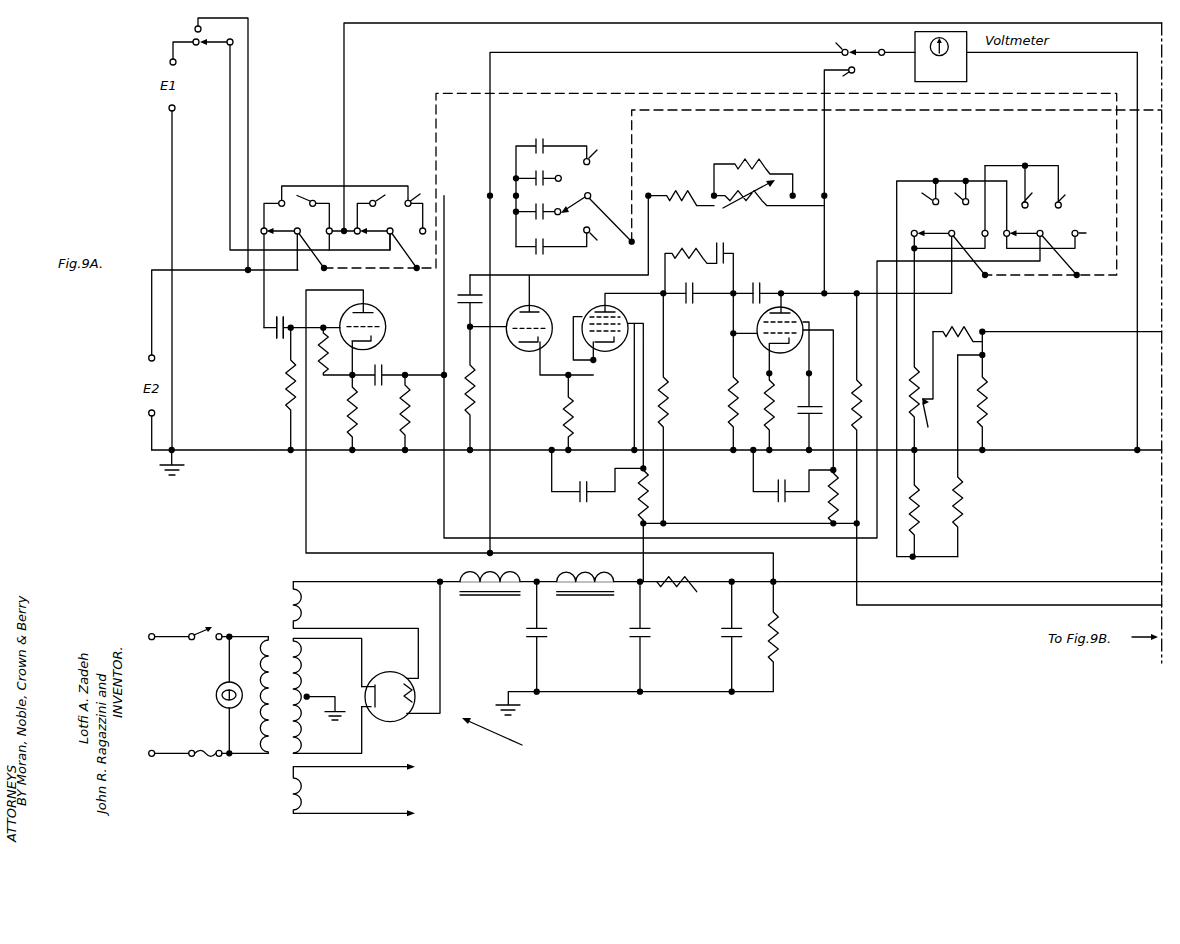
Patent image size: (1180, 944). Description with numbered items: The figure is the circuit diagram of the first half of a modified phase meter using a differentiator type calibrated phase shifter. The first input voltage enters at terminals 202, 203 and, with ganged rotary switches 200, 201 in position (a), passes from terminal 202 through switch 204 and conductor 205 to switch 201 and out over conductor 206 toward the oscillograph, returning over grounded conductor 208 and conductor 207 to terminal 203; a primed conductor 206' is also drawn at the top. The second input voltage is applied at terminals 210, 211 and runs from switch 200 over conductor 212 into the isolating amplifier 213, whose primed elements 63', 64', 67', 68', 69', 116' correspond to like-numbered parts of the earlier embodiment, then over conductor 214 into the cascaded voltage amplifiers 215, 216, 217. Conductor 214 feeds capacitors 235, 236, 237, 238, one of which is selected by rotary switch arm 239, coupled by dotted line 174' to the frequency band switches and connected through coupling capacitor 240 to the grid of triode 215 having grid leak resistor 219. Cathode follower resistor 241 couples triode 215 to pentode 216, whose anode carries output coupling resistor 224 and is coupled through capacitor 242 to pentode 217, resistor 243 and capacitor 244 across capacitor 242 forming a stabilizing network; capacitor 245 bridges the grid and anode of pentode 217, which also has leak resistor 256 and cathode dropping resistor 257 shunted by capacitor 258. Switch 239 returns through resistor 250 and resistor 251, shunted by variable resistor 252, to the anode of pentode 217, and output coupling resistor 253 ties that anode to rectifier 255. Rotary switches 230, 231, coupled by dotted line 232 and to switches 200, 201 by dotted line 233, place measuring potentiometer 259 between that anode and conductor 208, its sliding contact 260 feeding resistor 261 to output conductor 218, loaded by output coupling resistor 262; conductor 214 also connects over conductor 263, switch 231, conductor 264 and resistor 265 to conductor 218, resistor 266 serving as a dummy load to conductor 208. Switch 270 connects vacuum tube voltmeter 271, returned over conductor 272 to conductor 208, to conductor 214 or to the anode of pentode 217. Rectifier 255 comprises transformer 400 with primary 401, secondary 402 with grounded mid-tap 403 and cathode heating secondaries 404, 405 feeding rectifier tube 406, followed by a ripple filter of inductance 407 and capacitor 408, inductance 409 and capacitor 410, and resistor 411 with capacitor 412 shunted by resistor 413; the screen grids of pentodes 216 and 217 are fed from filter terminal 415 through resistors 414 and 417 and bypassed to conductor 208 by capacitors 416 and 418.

The rotary switch 200 is at (292, 229).
The rotary switch 201 is at (376, 229).
The upper input terminal 202 is at (178, 63).
The lower input terminal 203 is at (176, 110).
The switch 204 is at (218, 40).
The conductor 205 is at (230, 155).
The conductor 206 is at (753, 127).
The conductor 206' is at (1140, 343).
The conductor 207 is at (170, 227).
The grounded conductor 208 is at (235, 443).
The upper input terminal 210 is at (146, 355).
The lower input terminal 211 is at (146, 416).
The conductor 212 is at (263, 303).
The isolating amplifier 213 is at (378, 319).
The conductor 214 is at (443, 346).
The voltage amplifier 215 is at (545, 310).
The voltage amplifier 216 is at (622, 314).
The voltage amplifier 217 is at (798, 316).
The output conductor 218 is at (1095, 333).
The grid leak resistor 219 is at (476, 390).
The output coupling resistor 224 is at (672, 410).
The rotary switch 230 is at (940, 232).
The rotary switch 231 is at (1030, 232).
The dotted line 232 is at (1052, 278).
The dotted line 233 is at (1116, 155).
The capacitor 235 is at (548, 251).
The capacitor 236 is at (548, 219).
The capacitor 237 is at (550, 172).
The capacitor 238 is at (547, 141).
The rotary switch arm 239 is at (583, 189).
The coupling capacitor 240 is at (481, 293).
The cathode follower resistor 241 is at (574, 418).
The capacitor 242 is at (694, 301).
The resistor 243 is at (688, 248).
The capacitor 244 is at (725, 251).
The capacitor 245 is at (760, 290).
The resistor 250 is at (678, 192).
The resistor 251 is at (756, 162).
The variable resistor 252 is at (760, 200).
The output coupling resistor 253 is at (853, 380).
The rectifier 255 is at (507, 739).
The leak resistor 256 is at (728, 392).
The cathode dropping resistor 257 is at (778, 400).
The capacitor 258 is at (803, 418).
The measuring potentiometer 259 is at (922, 366).
The sliding contact 260 is at (935, 386).
The resistor 261 is at (976, 326).
The output coupling resistor 262 is at (990, 395).
The conductor 263 is at (443, 497).
The conductor 264 is at (921, 180).
The resistor 265 is at (968, 513).
The resistor 266 is at (921, 522).
The switch 270 is at (876, 50).
The vacuum tube voltmeter 271 is at (921, 63).
The conductor 272 is at (1137, 79).
The dotted line 174' is at (897, 176).
The capacitor 63' is at (259, 331).
The resistor 64' is at (259, 390).
The resistor 67' is at (334, 413).
The capacitor 68' is at (398, 355).
The resistor 69' is at (332, 363).
The resistor 116' is at (388, 413).
The transformer 400 is at (283, 647).
The primary 401 is at (265, 749).
The secondary 402 is at (310, 716).
The grounded mid-tap 403 is at (336, 698).
The cathode heating secondary 404 is at (311, 606).
The cathode heating secondary 405 is at (312, 793).
The rectifier tube 406 is at (386, 714).
The inductance 407 is at (490, 578).
The capacitor 408 is at (546, 640).
The inductance 409 is at (588, 577).
The capacitor 410 is at (649, 640).
The resistor 411 is at (697, 580).
The capacitor 412 is at (740, 640).
The resistor 413 is at (782, 640).
The resistor 414 is at (632, 502).
The terminal 415 is at (649, 580).
The capacitor 416 is at (578, 502).
The resistor 417 is at (828, 502).
The capacitor 418 is at (776, 500).